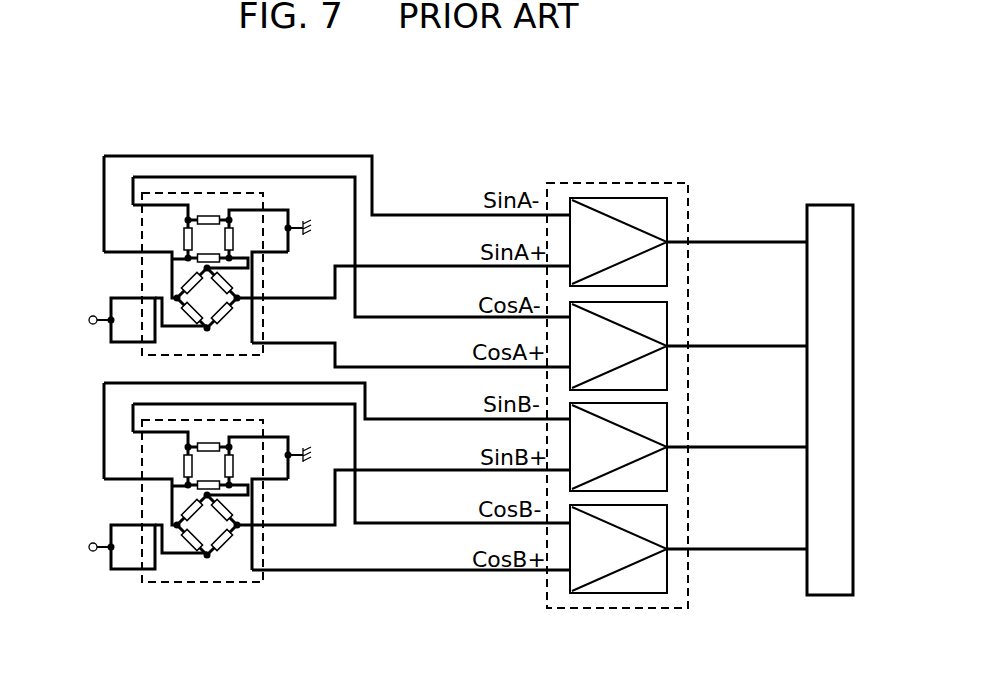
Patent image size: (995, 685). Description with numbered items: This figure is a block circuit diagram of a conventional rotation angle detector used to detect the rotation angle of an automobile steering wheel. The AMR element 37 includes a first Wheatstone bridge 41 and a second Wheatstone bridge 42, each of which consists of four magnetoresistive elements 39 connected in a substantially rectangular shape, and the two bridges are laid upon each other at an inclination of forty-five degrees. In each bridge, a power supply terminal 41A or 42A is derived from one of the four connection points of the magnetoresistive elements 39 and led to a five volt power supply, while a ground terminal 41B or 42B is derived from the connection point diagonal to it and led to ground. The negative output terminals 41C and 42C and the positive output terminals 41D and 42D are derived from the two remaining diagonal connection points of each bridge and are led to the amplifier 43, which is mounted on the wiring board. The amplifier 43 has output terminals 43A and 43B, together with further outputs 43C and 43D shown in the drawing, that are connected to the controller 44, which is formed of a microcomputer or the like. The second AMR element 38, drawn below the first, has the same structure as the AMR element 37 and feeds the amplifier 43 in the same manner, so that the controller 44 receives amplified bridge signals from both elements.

The AMR element 37 is at (157, 192).
The AMR element 38 is at (193, 580).
The magnetoresistive elements 39 is at (206, 215).
The first Wheatstone bridge 41 is at (177, 239).
The power supply terminal 41A is at (120, 345).
The ground terminal 41B is at (238, 207).
The negative output terminal 41C is at (443, 317).
The positive output terminal 41D is at (452, 367).
The second Wheatstone bridge 42 is at (200, 330).
The power supply terminal 42A is at (127, 297).
The ground terminal 42B is at (270, 250).
The negative output terminal 42C is at (388, 215).
The positive output terminal 42D is at (422, 265).
The amplifier 43 is at (599, 183).
The output terminal 43A is at (710, 235).
The output terminal 43B is at (785, 345).
The differential amplifier 43C is at (705, 443).
The differential amplifier 43D is at (702, 547).
The controller 44 is at (837, 205).